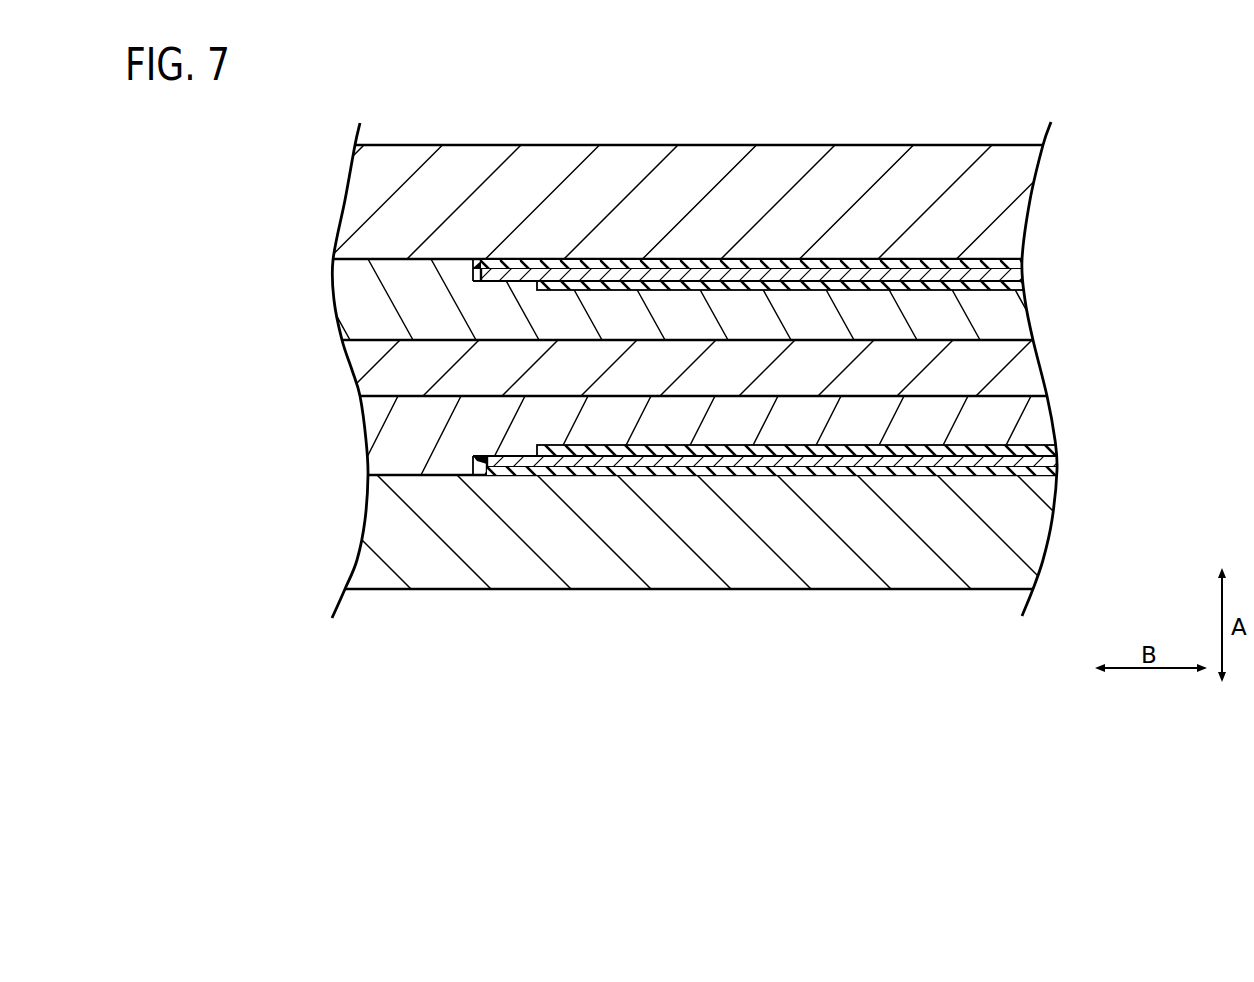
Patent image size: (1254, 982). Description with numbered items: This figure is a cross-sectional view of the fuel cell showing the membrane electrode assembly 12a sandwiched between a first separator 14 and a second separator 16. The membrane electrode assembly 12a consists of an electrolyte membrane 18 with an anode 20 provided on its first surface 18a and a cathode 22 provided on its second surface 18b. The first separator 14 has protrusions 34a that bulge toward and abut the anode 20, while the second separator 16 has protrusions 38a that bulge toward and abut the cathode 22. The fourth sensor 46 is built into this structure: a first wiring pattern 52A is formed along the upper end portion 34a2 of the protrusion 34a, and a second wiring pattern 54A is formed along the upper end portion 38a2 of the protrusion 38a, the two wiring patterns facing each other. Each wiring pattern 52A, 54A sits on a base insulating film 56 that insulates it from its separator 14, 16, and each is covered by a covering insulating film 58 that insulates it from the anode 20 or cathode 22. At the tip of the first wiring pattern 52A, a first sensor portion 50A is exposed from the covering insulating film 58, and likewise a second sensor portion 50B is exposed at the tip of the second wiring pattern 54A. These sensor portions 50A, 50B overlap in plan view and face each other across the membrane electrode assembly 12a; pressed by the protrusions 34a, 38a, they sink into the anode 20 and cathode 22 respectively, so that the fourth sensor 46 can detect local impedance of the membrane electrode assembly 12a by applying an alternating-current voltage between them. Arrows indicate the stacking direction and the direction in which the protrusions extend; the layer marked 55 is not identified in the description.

The membrane electrode assembly 12a is at (278, 283).
The first separator 14 is at (605, 568).
The second separator 16 is at (472, 165).
The electrolyte membrane 18 is at (388, 375).
The first surface 18a is at (1028, 410).
The second surface 18b is at (1018, 340).
The anode 20 is at (393, 446).
The cathode 22 is at (368, 303).
The protrusion 34a is at (428, 475).
The upper end portion 34a2 is at (754, 474).
The protrusion 38a is at (416, 259).
The upper end portion 38a2 is at (760, 266).
The fourth sensor 46 is at (607, 248).
The first sensor portion 50A is at (513, 470).
The second sensor portion 50B is at (527, 290).
The first wiring pattern 52A is at (1058, 461).
The second wiring pattern 54A is at (1021, 275).
The conductive layer 55 is at (850, 251).
The base insulating film 56 is at (1018, 263).
The covering insulating film 58 is at (1022, 285).